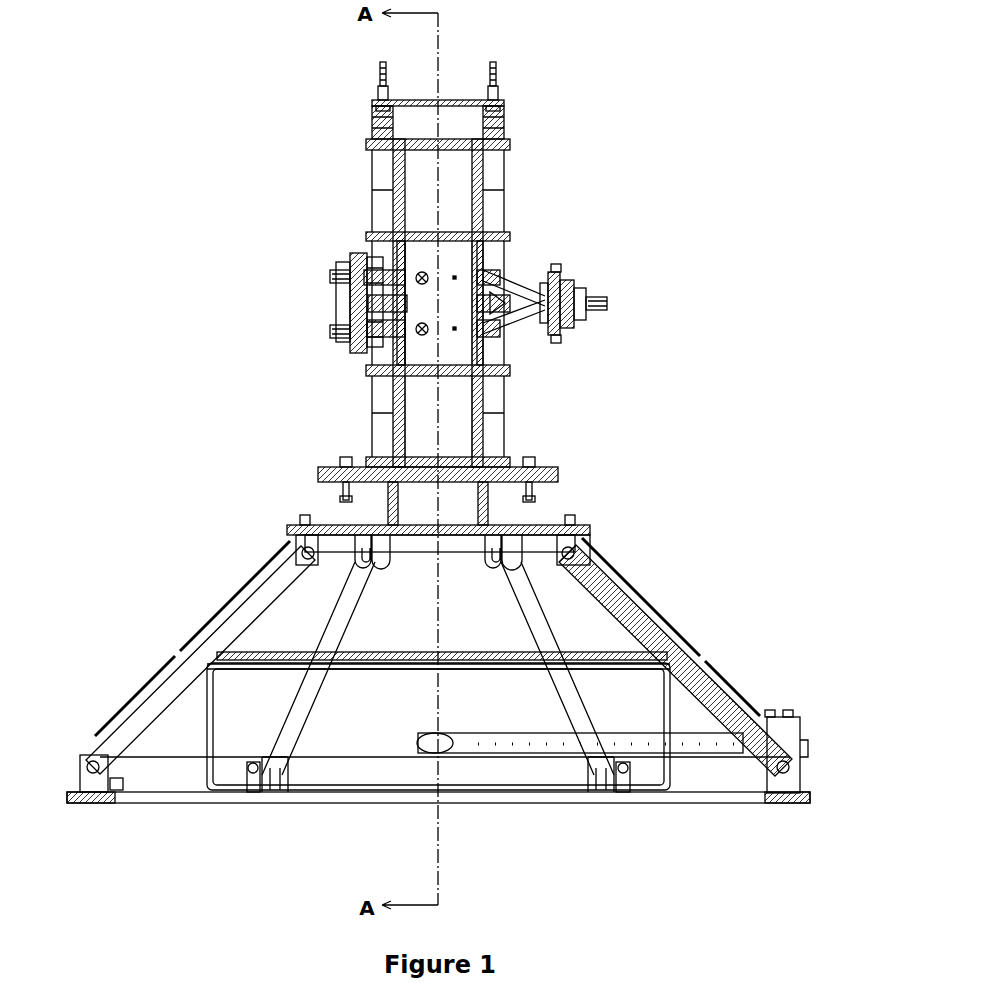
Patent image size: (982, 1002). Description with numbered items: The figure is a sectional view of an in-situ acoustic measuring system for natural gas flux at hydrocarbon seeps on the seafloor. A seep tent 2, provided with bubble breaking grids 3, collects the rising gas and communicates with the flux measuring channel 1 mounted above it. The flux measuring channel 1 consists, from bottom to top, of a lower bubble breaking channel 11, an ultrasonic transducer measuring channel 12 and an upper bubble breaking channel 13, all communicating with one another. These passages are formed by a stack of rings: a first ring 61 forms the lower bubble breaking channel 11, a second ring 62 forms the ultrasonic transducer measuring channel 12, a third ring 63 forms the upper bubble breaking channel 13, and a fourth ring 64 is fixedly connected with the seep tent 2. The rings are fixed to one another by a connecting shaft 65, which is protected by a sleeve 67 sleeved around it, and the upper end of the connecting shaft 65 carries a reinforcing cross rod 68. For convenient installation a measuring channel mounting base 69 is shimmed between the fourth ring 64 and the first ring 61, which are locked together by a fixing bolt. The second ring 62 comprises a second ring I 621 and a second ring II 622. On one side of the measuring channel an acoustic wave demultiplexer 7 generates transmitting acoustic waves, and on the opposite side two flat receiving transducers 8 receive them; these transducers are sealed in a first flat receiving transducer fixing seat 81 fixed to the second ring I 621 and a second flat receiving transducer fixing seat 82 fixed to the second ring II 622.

The flux measuring channel 1 is at (668, 368).
The seep tent 2 is at (718, 703).
The bubble breaking grids 3 is at (217, 627).
The acoustic wave demultiplexer 7 is at (570, 275).
The flat receiving transducers 8 is at (348, 262).
The lower bubble breaking channel 11 is at (455, 403).
The ultrasonic transducer measuring channel 12 is at (456, 326).
The upper bubble breaking channel 13 is at (578, 327).
The first ring 61 is at (395, 405).
The second ring 62 is at (300, 157).
The third ring 63 is at (478, 210).
The fourth ring 64 is at (360, 507).
The connecting shaft 65 is at (382, 177).
The sleeve 67 is at (380, 123).
The reinforcing cross rod 68 is at (457, 100).
The measuring channel mounting base 69 is at (353, 460).
The first flat receiving transducer fixing seat 81 is at (342, 310).
The second flat receiving transducer fixing seat 82 is at (337, 288).
The second ring I 621 is at (385, 253).
The second ring II 622 is at (370, 257).